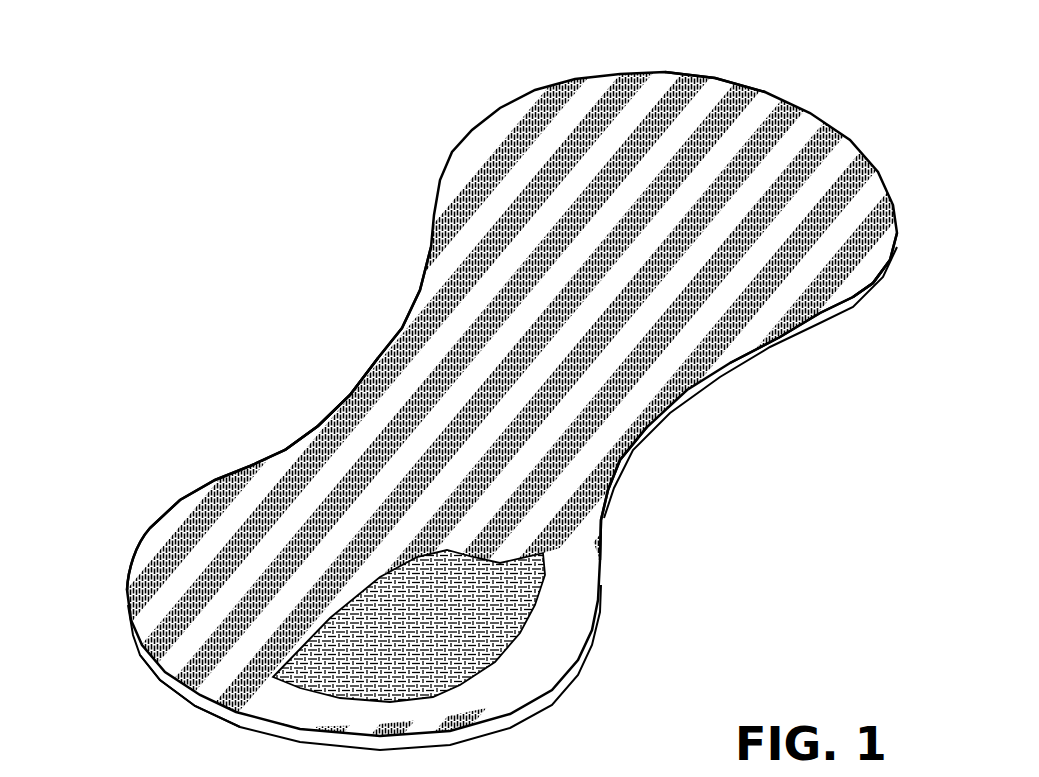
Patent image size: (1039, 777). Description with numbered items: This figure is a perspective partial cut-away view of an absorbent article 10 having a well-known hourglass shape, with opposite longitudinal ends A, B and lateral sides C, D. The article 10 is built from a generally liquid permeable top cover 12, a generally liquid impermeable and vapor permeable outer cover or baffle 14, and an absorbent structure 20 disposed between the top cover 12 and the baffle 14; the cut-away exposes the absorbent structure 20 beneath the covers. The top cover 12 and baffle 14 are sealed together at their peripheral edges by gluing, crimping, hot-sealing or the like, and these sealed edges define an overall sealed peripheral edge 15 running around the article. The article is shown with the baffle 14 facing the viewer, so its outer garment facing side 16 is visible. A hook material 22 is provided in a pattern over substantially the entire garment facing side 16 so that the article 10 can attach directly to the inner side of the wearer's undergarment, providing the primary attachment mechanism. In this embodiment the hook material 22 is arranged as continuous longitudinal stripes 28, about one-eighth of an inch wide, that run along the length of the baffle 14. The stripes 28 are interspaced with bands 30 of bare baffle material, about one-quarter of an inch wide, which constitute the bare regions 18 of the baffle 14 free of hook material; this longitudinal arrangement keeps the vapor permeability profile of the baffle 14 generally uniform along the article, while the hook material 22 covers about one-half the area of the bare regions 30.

The absorbent article 10 is at (337, 323).
The top cover 12 is at (567, 637).
The baffle 14 is at (280, 467).
The sealed peripheral edge 15 is at (693, 403).
The garment facing side 16 is at (560, 115).
The bare regions 18 is at (820, 316).
The absorbent structure 20 is at (447, 687).
The hook material 22 is at (853, 253).
The longitudinal stripes 28 is at (748, 100).
The bands of bare baffle material 30 is at (160, 608).
The longitudinal end A is at (722, 82).
The longitudinal end B is at (177, 700).
The lateral side C is at (615, 508).
The lateral side D is at (320, 423).